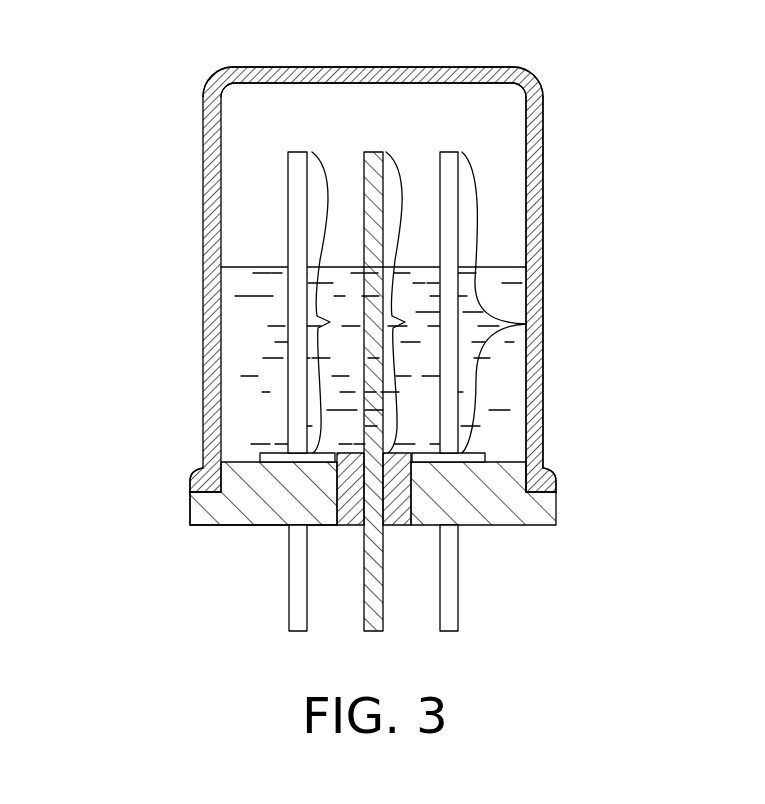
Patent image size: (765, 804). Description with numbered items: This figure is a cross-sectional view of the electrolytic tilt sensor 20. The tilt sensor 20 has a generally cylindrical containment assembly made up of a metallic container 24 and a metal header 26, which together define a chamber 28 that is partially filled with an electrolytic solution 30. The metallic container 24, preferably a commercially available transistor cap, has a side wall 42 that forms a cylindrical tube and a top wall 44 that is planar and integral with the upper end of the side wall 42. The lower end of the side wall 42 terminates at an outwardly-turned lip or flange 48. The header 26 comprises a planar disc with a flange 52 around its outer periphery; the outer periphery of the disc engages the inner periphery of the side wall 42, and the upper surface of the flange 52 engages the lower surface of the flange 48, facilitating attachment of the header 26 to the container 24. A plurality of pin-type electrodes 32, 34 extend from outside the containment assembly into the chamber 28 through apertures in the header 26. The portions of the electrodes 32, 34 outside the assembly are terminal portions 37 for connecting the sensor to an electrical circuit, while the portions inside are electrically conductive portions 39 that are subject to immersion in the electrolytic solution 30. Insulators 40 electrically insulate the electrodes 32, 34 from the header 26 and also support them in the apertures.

The tilt sensor 20 is at (137, 330).
The metallic container 24 is at (203, 233).
The metal header 26 is at (530, 508).
The chamber 28 is at (270, 208).
The electrolytic solution 30 is at (271, 371).
The pin-type electrode 32 is at (370, 152).
The pin-type electrodes 34 is at (300, 152).
The terminal portions 37 is at (296, 600).
The electrically conductive portions 39 is at (572, 323).
The insulators 40 is at (393, 513).
The side wall 42 is at (543, 213).
The top wall 44 is at (365, 67).
The flange 48 is at (190, 486).
The flange 52 is at (190, 510).